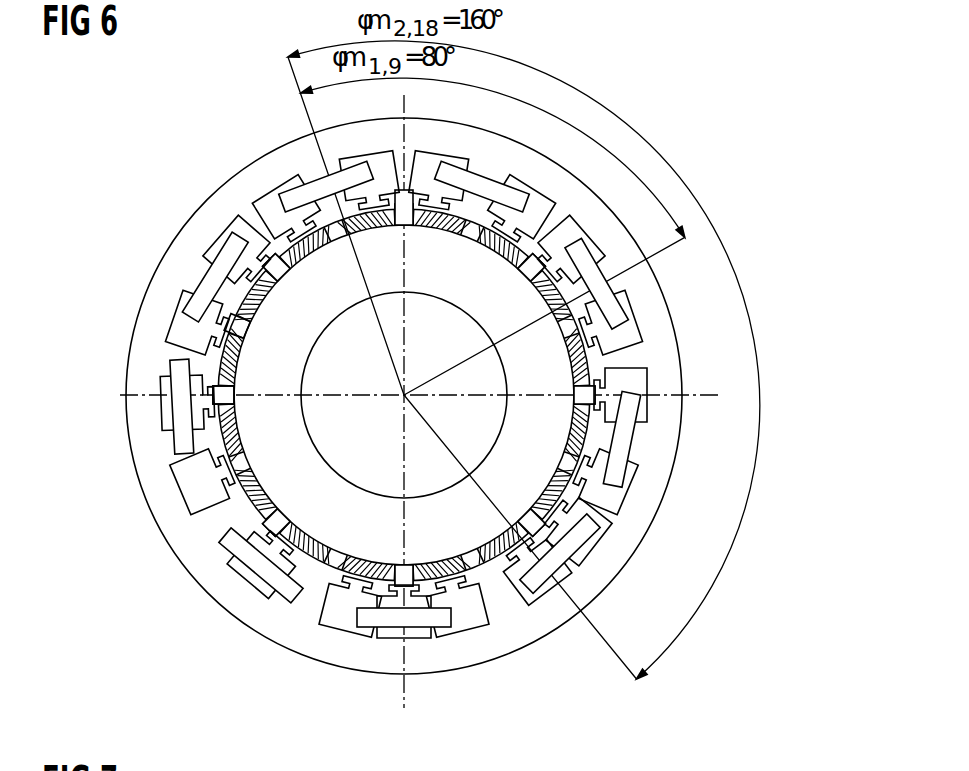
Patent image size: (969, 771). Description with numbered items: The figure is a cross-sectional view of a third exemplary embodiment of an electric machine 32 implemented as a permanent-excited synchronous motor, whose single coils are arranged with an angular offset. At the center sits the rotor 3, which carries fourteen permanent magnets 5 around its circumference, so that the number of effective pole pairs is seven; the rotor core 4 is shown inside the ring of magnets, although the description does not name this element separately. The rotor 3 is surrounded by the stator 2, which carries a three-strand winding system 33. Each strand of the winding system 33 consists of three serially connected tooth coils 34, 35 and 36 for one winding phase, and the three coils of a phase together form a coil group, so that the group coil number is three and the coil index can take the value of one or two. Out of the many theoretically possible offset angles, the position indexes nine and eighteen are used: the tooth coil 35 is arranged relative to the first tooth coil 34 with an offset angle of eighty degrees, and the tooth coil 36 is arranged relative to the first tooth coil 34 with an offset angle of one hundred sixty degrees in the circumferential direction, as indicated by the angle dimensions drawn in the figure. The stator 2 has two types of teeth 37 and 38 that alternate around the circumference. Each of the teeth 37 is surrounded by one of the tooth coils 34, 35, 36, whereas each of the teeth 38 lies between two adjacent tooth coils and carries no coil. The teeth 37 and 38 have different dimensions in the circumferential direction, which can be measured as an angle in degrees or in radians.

The stator 2 is at (273, 633).
The rotor 3 is at (222, 345).
The rotor 4 is at (227, 485).
The permanent magnets 5 is at (225, 362).
The electric machine 32 is at (659, 107).
The winding system 33 is at (201, 205).
The tooth coil 34 is at (325, 190).
The tooth coil 35 is at (203, 283).
The tooth coil 36 is at (472, 185).
The teeth 37 is at (203, 517).
The teeth 38 is at (247, 597).